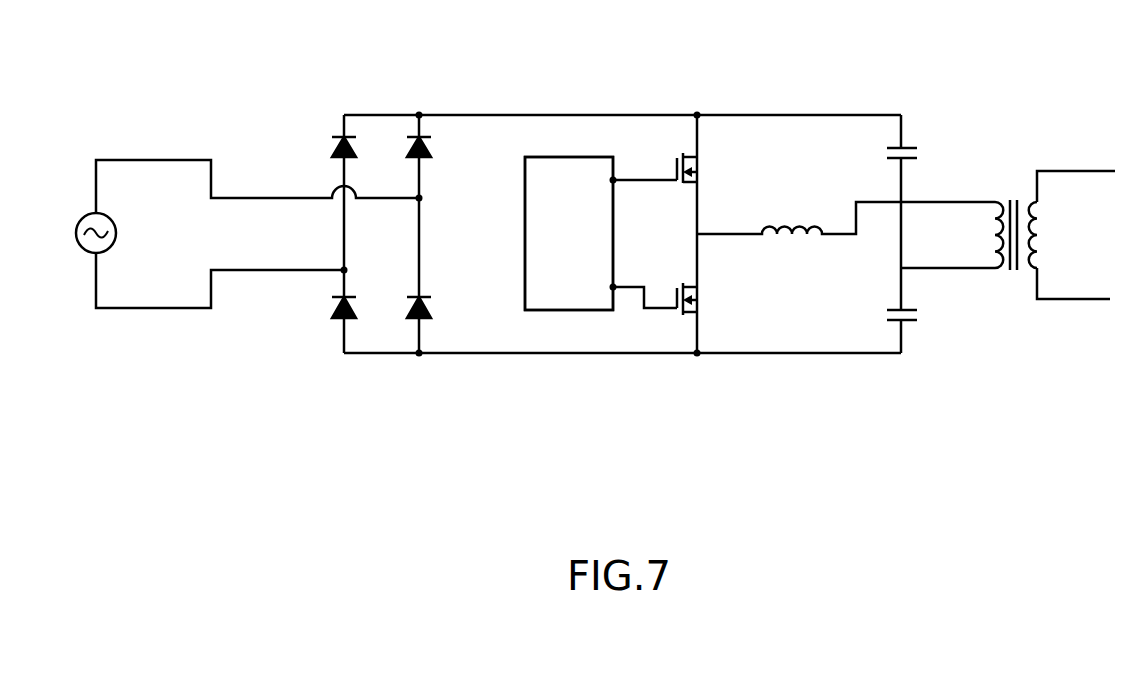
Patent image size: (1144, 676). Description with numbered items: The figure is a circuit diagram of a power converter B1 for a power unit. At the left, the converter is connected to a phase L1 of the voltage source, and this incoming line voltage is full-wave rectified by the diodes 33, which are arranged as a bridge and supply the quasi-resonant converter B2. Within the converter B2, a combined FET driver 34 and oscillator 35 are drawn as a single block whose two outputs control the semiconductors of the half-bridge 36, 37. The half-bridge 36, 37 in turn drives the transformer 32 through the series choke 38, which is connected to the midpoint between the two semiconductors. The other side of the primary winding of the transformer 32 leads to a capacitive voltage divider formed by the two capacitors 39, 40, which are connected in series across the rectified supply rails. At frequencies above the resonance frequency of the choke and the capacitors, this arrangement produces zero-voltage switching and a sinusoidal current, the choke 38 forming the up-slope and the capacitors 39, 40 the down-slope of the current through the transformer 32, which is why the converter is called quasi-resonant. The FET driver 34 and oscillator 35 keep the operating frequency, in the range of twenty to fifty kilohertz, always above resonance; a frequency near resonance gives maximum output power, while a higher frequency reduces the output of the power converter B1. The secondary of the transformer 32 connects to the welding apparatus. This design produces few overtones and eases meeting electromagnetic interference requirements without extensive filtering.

The phase L1 is at (225, 234).
The power converter B1 is at (417, 92).
The quasi-resonant converter B2 is at (830, 113).
The diodes 33 is at (337, 152).
The FET driver 34 is at (580, 208).
The oscillator 35 is at (580, 277).
The half-bridge 36 is at (700, 172).
The half-bridge 37 is at (700, 300).
The choke 38 is at (792, 222).
The capacitor 39 is at (908, 147).
The capacitor 40 is at (910, 320).
The transformer 32 is at (1005, 207).